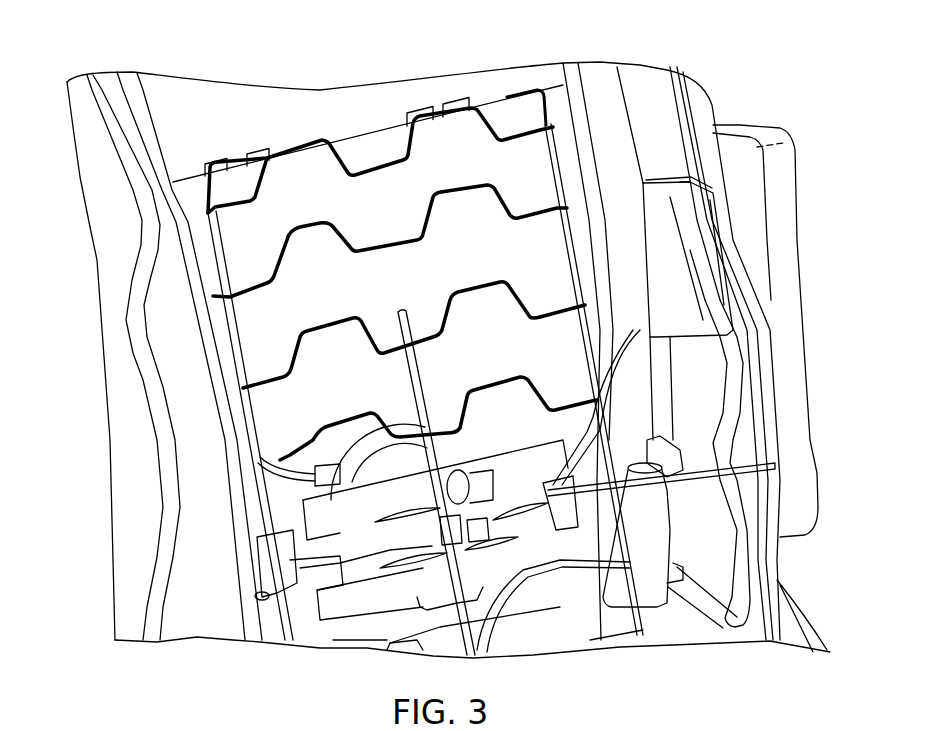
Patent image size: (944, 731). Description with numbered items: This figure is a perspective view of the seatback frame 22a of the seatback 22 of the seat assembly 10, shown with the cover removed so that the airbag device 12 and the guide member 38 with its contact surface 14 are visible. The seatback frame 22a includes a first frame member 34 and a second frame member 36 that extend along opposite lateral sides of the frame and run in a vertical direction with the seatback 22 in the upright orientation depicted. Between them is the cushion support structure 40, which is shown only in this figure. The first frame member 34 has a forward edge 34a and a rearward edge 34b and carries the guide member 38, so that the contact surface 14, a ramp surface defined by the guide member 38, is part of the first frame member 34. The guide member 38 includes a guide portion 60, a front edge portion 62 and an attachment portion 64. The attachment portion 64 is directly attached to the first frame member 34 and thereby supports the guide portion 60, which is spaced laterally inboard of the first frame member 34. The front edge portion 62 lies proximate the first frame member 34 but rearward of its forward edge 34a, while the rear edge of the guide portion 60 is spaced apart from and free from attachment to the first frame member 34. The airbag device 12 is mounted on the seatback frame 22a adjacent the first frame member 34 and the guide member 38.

The seat assembly 10 is at (299, 36).
The airbag device 12 is at (777, 193).
The contact surface 14 is at (700, 278).
The seatback 22 is at (598, 82).
The seatback frame 22a is at (697, 95).
The first frame member 34 is at (607, 227).
The forward edge 34a is at (770, 555).
The rearward edge 34b is at (580, 162).
The second frame member 36 is at (167, 313).
The guide member 38 is at (680, 180).
The cushion support structure 40 is at (363, 236).
The guide portion 60 is at (663, 245).
The front edge portion 62 is at (707, 252).
The attachment portion 64 is at (654, 178).